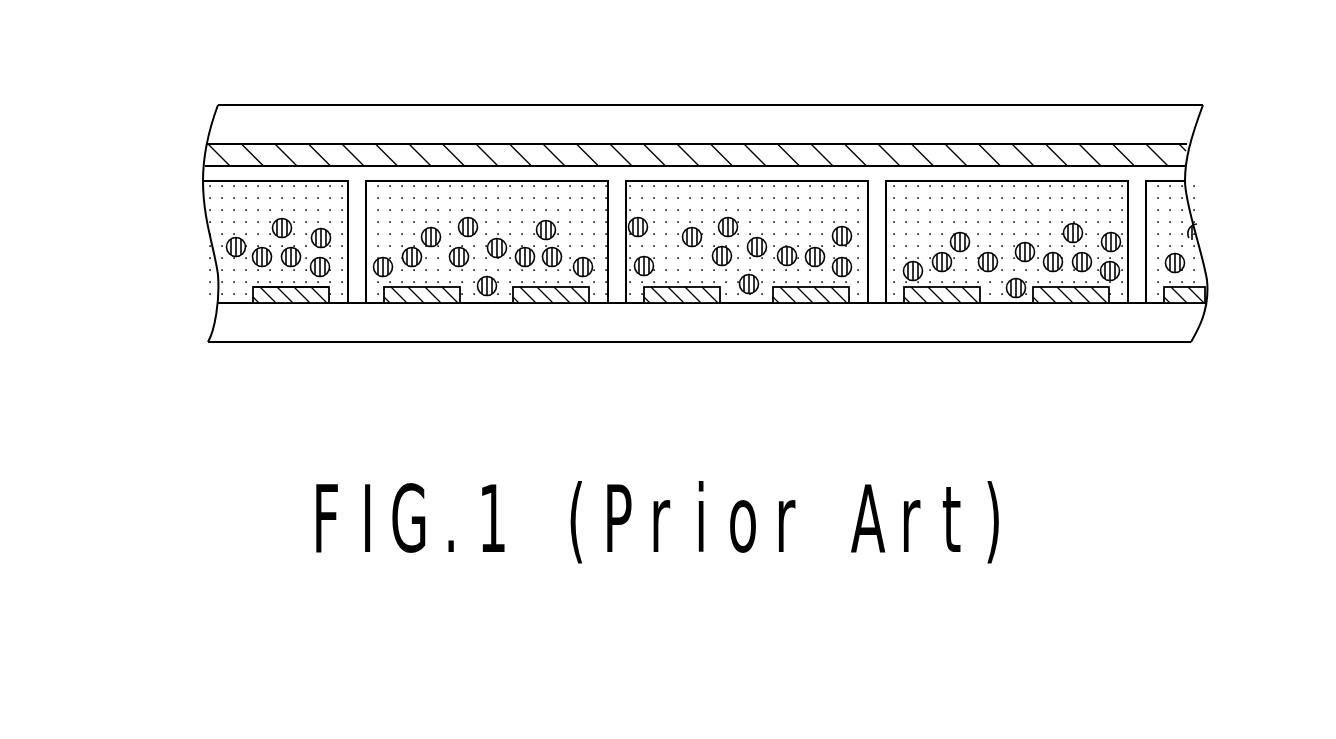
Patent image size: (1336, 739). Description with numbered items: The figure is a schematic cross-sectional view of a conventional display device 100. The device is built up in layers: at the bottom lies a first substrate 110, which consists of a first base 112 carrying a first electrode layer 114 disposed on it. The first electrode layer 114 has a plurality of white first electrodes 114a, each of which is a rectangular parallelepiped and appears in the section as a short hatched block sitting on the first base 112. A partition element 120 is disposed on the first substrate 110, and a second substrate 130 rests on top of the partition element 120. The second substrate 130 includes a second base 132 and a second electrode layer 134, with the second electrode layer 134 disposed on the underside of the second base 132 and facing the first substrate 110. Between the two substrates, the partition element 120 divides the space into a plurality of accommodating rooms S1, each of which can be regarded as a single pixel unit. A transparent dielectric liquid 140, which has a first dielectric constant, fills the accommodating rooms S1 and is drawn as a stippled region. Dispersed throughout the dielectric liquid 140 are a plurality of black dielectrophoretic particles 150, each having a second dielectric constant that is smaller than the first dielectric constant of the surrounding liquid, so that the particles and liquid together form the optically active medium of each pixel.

The display device 100 is at (666, 222).
The first substrate 110 is at (610, 304).
The first base 112 is at (222, 330).
The first electrode layer 114 is at (651, 344).
The first electrode 114a is at (245, 291).
The partition element 120 is at (695, 172).
The second substrate 130 is at (608, 140).
The second base 132 is at (218, 118).
The second electrode layer 134 is at (208, 159).
The dielectric liquid 140 is at (392, 193).
The dielectrophoretic particles 150 is at (283, 218).
The accommodating room S1 is at (497, 207).